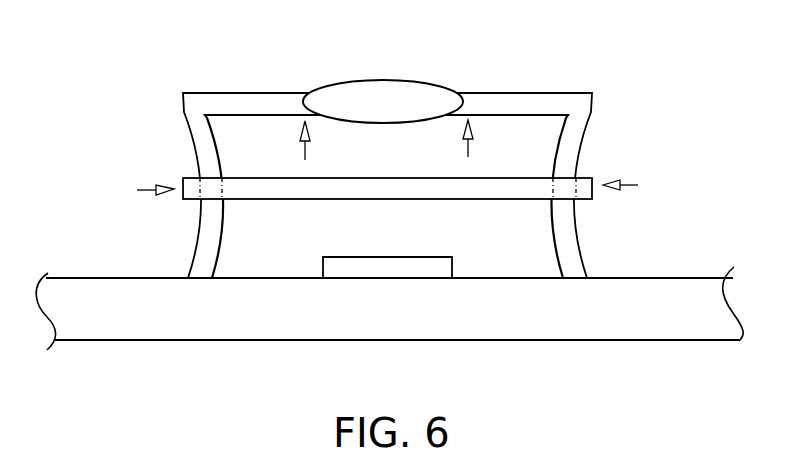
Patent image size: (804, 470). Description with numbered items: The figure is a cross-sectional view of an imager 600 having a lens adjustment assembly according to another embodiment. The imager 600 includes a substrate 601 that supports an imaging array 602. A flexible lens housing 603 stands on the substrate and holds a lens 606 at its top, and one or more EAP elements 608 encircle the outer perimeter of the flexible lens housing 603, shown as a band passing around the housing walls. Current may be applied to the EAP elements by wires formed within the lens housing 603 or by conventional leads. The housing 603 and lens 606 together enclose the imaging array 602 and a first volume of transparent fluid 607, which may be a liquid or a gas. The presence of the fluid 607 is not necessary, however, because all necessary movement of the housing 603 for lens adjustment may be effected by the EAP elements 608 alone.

The imager 600 is at (98, 82).
The substrate 601 is at (688, 322).
The imaging array 602 is at (355, 270).
The flexible lens housing 603 is at (253, 106).
The lens 606 is at (402, 112).
The transparent fluid 607 is at (266, 156).
The EAP elements 608 is at (523, 186).